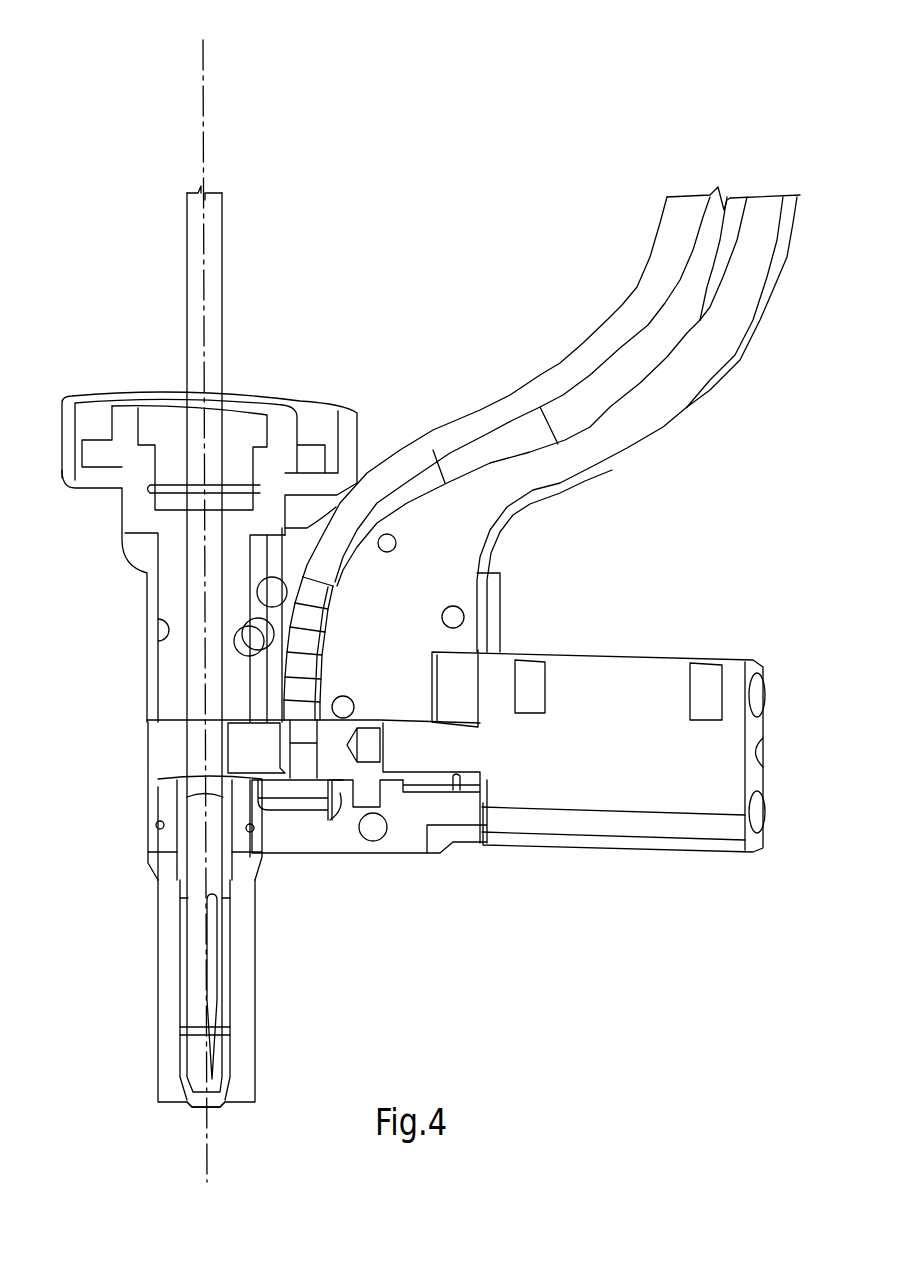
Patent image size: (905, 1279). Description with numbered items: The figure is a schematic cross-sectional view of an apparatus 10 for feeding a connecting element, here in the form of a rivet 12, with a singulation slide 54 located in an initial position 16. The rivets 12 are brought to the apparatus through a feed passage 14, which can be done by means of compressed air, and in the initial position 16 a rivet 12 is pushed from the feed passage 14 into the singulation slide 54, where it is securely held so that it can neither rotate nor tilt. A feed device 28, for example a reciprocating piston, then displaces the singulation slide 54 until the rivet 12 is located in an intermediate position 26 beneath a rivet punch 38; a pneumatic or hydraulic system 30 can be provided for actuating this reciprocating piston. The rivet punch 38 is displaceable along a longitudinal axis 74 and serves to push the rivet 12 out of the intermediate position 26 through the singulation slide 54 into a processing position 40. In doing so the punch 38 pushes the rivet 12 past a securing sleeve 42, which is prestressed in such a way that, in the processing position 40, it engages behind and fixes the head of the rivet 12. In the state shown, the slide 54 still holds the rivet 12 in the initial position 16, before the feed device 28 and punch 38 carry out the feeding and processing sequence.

The apparatus 10 is at (546, 1031).
The rivet 12 is at (313, 590).
The feed passage 14 is at (723, 232).
The initial position 16 is at (305, 755).
The intermediate position 26 is at (214, 745).
The feed device 28 is at (447, 749).
The pneumatic or hydraulic system 30 is at (710, 752).
The rivet punch 38 is at (223, 257).
The processing position 40 is at (203, 1106).
The securing sleeve 42 is at (180, 980).
The singulation slide 54 is at (368, 772).
The longitudinal axis 74 is at (203, 77).